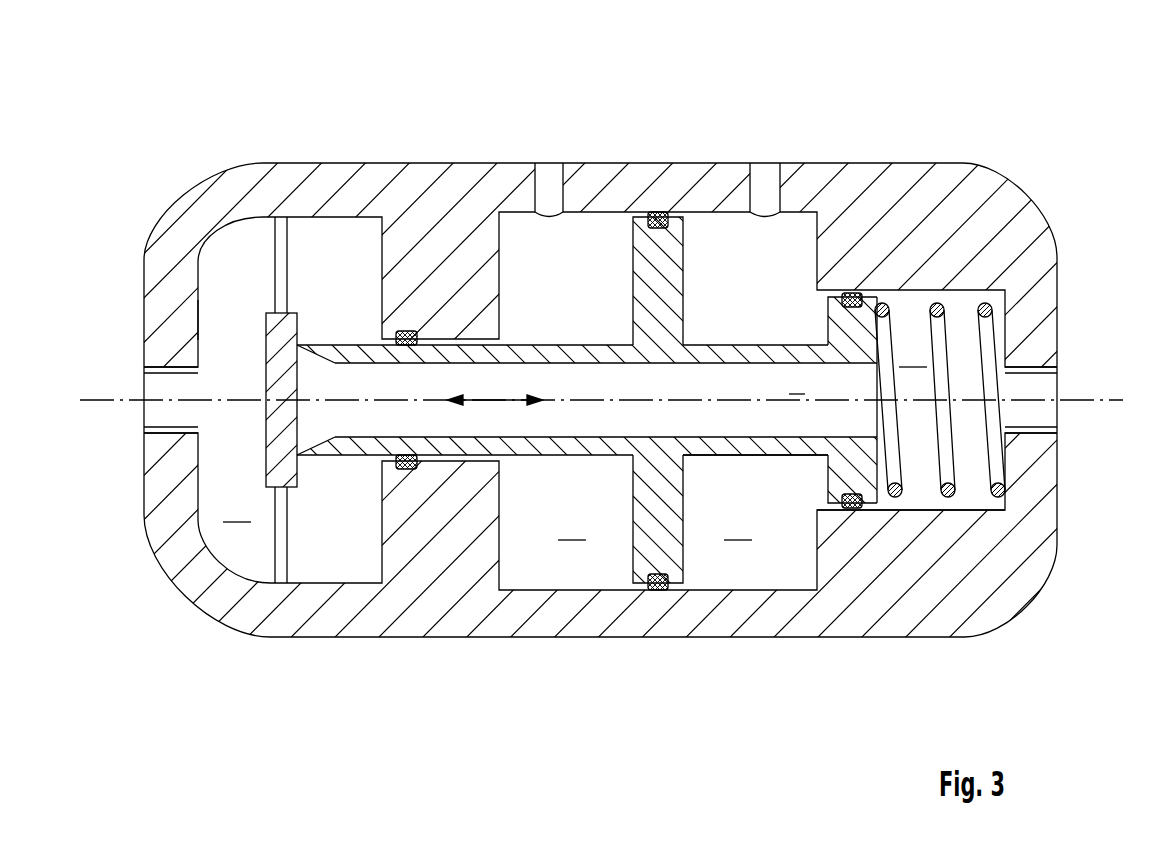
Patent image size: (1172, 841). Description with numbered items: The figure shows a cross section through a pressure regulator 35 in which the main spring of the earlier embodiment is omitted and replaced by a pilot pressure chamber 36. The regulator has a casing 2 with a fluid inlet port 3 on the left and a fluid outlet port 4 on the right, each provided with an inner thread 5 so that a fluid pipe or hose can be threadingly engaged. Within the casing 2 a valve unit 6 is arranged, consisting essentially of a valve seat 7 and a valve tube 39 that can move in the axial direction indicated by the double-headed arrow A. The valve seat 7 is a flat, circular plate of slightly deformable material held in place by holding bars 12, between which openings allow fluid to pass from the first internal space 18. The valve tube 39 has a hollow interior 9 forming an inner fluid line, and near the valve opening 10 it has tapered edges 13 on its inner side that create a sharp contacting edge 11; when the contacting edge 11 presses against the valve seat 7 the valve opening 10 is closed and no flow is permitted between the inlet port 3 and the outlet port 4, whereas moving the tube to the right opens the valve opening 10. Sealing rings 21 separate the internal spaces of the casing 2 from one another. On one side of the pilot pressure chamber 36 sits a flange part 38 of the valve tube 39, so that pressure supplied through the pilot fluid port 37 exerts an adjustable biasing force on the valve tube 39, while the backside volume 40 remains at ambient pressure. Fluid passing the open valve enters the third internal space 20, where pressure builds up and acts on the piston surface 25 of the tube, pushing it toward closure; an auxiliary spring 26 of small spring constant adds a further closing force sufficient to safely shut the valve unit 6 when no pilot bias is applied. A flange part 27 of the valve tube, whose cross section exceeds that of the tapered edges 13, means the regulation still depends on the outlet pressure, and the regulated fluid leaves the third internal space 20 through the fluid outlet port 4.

The casing 2 is at (948, 158).
The fluid inlet port 3 is at (152, 390).
The fluid outlet port 4 is at (1045, 389).
The inner thread 5 is at (180, 427).
The valve unit 6 is at (240, 322).
The valve seat 7 is at (254, 344).
The hollow interior 9 is at (586, 420).
The valve opening 10 is at (312, 323).
The contacting edge 11 is at (333, 440).
The holding bars 12 is at (278, 257).
The tapered edges 13 is at (333, 440).
The first internal space 18 is at (237, 506).
The third internal space 20 is at (940, 400).
The sealing rings 21 is at (407, 331).
The piston surface 25 is at (878, 480).
The auxiliary spring 26 is at (953, 505).
The flange part 27 is at (835, 323).
The pressure regulator 35 is at (1037, 158).
The pilot pressure chamber 36 is at (572, 524).
The pilot fluid port 37 is at (548, 182).
The flange part 38 is at (675, 252).
The valve tube 39 is at (788, 462).
The backside volume 40 is at (738, 524).
The axial direction A is at (497, 402).